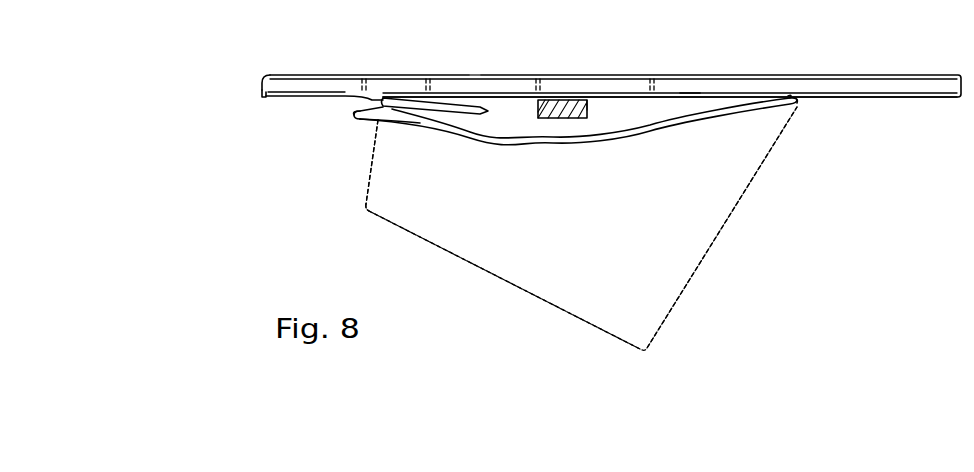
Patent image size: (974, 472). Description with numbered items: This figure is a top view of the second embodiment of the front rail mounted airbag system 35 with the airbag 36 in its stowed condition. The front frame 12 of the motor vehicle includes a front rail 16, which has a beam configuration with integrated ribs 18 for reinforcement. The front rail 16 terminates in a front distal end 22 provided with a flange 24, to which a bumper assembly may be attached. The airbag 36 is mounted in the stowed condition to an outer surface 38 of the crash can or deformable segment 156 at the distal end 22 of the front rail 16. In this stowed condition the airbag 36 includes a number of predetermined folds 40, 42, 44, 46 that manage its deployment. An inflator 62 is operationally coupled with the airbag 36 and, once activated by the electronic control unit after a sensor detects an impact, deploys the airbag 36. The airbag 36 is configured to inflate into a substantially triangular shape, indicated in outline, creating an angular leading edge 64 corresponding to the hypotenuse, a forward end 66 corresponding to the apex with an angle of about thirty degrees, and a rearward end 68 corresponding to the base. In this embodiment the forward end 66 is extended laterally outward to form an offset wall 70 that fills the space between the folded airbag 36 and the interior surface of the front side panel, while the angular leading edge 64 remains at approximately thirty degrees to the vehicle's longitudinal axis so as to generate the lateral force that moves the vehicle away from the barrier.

The front frame 12 is at (868, 82).
The front rail 16 is at (848, 88).
The integrated ribs 18 is at (364, 77).
The front distal end 22 is at (282, 87).
The flange 24 is at (262, 97).
The front rail mounted airbag system 35 is at (643, 358).
The airbag 36 is at (722, 112).
The outer surface 38 is at (688, 93).
The predetermined fold 40 is at (357, 121).
The predetermined fold 42 is at (478, 113).
The predetermined fold 44 is at (405, 123).
The predetermined fold 46 is at (797, 107).
The inflator 62 is at (577, 99).
The angular leading edge 64 is at (455, 133).
The forward end 66 is at (382, 185).
The rearward end 68 is at (707, 263).
The offset wall 70 is at (368, 173).
The deformable segment 156 is at (474, 66).